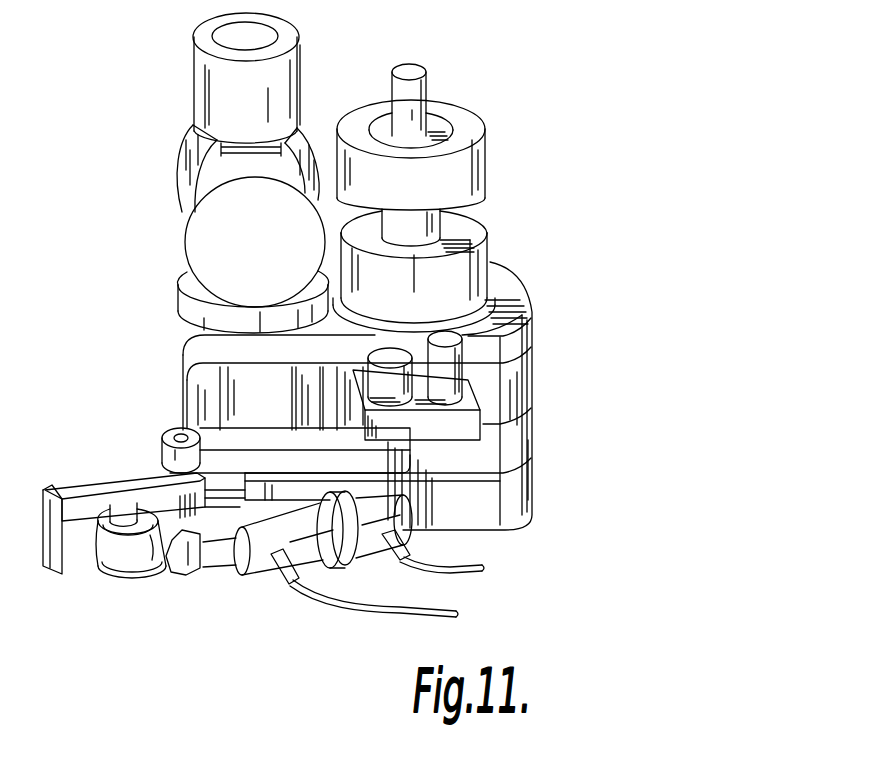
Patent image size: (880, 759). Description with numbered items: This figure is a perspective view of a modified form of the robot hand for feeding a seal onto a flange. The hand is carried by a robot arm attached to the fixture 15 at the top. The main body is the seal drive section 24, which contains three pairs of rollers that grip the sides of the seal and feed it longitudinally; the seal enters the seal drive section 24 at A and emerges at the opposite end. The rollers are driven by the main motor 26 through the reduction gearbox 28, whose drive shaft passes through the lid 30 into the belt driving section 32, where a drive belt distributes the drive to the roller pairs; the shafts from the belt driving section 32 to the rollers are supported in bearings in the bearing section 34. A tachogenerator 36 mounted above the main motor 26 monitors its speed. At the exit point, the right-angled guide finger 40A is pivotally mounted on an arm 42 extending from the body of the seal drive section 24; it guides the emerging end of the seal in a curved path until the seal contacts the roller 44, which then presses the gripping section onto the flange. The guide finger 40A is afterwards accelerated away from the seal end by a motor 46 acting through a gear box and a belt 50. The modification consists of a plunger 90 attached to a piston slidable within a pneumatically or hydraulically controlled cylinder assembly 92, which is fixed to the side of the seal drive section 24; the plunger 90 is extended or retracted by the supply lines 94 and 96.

The fixture 15 is at (176, 141).
The tachogenerator 36 is at (430, 90).
The main motor 26 is at (483, 160).
The reduction gearbox 28 is at (485, 242).
The lid 30 is at (512, 300).
The belt driving section 32 is at (530, 366).
The bearing section 34 is at (530, 432).
The seal entry point A is at (546, 470).
The seal drive section 24 is at (518, 506).
The motor 46 is at (458, 372).
The belt 50 is at (233, 457).
The arm 42 is at (110, 507).
The guide finger 40A is at (55, 567).
The roller 44 is at (133, 567).
The plunger 90 is at (205, 569).
The cylinder assembly 92 is at (261, 580).
The supply line 94 is at (418, 620).
The supply line 96 is at (486, 579).